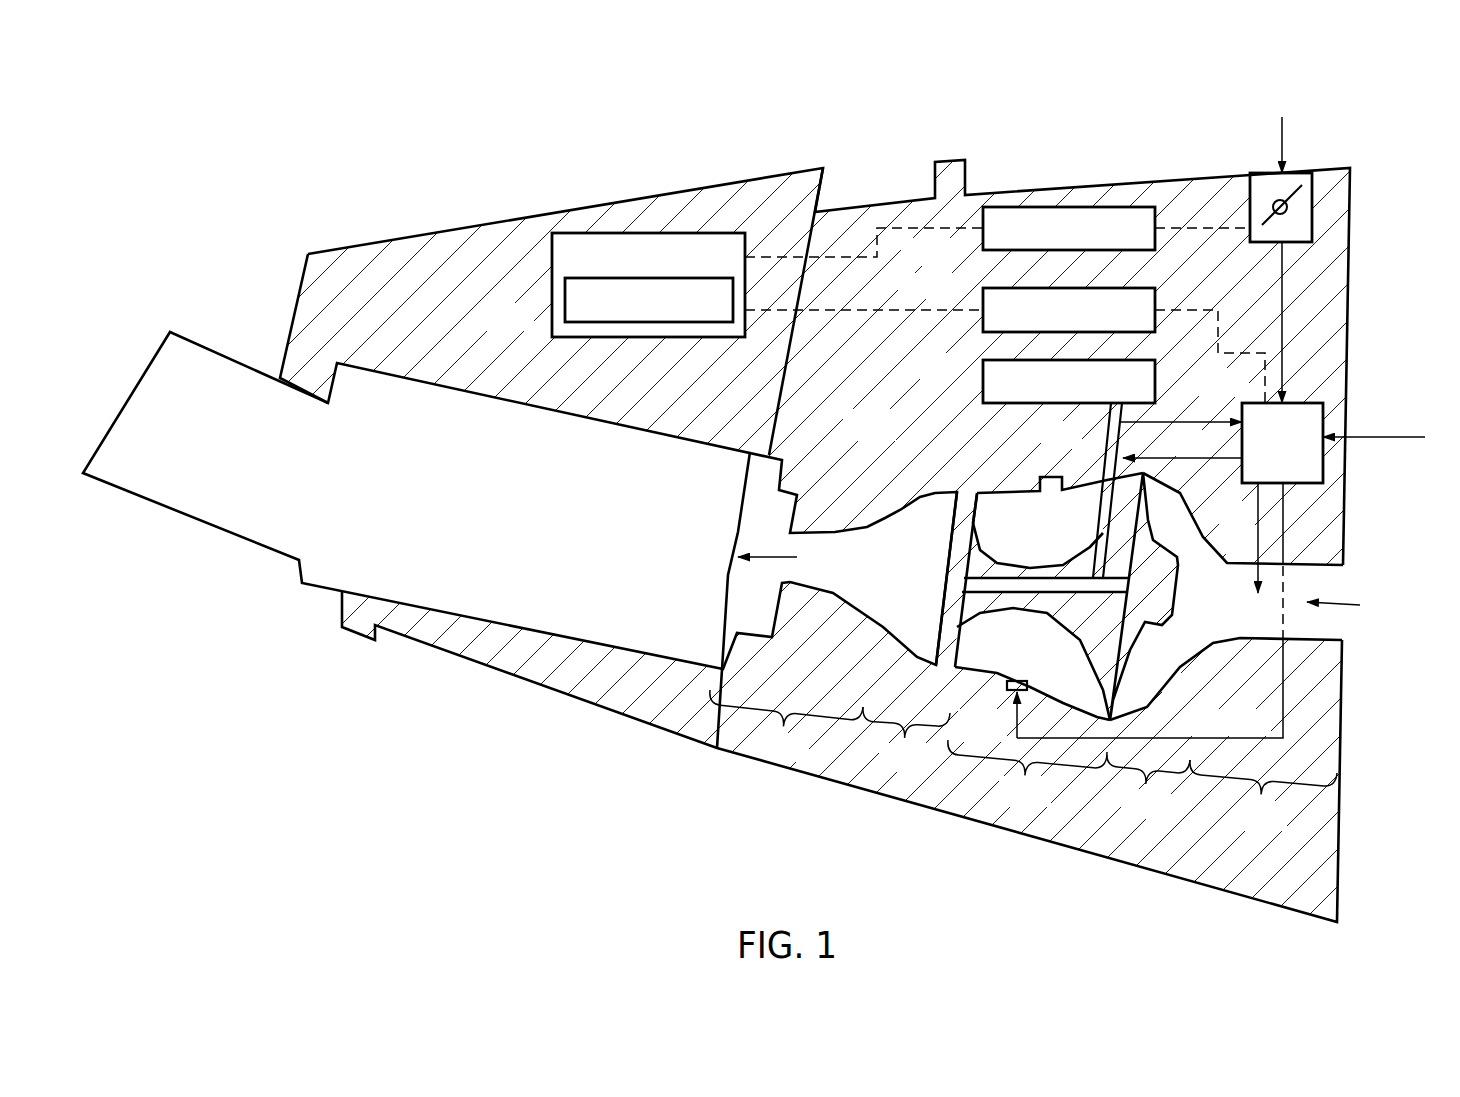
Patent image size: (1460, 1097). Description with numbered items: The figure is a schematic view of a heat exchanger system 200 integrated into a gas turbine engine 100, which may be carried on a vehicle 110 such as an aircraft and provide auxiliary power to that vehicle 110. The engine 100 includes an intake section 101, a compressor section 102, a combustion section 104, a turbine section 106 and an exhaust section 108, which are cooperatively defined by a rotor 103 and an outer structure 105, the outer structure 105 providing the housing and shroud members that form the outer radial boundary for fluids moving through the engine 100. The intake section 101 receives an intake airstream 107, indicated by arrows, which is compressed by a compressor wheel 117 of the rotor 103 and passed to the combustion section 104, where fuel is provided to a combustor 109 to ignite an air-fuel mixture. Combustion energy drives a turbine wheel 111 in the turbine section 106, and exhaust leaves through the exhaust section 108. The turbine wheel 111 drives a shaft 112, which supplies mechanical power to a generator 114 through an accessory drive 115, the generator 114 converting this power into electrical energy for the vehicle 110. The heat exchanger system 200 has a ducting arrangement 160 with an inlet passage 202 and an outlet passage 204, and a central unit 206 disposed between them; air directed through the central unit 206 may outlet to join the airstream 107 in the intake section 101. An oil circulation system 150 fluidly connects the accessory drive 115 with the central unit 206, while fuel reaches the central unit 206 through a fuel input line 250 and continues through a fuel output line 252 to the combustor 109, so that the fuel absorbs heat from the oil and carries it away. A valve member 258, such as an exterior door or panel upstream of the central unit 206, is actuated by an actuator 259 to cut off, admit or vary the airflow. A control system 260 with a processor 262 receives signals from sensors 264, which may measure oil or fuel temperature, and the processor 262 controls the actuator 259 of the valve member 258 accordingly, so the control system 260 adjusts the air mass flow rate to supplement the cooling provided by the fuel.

The gas turbine engine 100 is at (520, 408).
The intake section 101 is at (1263, 796).
The compressor section 102 is at (1148, 786).
The rotor 103 is at (1058, 523).
The combustion section 104 is at (1027, 774).
The outer structure 105 is at (892, 438).
The turbine section 106 is at (906, 740).
The intake airstream 107 is at (1360, 605).
The exhaust section 108 is at (786, 727).
The combustor 109 is at (1005, 680).
The vehicle 110 is at (808, 262).
The turbine wheel 111 is at (945, 582).
The shaft 112 is at (1033, 593).
The generator 114 is at (983, 380).
The accessory drive 115 is at (1105, 452).
The compressor wheel 117 is at (1142, 627).
The oil circulation system 150 is at (1170, 418).
The ducting arrangement 160 is at (1383, 202).
The heat exchanger system 200 is at (1367, 236).
The inlet passage 202 is at (1267, 173).
The outlet passage 204 is at (1247, 563).
The central unit 206 is at (1337, 410).
The fuel input line 250 is at (1375, 439).
The fuel output line 252 is at (1245, 740).
The valve member 258 is at (1250, 197).
The actuator 259 is at (983, 233).
The control system 260 is at (767, 234).
The processor 262 is at (563, 300).
The sensors 264 is at (983, 300).